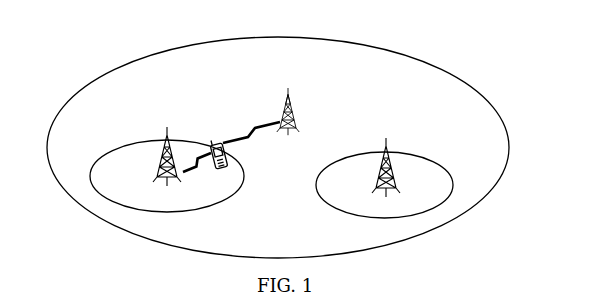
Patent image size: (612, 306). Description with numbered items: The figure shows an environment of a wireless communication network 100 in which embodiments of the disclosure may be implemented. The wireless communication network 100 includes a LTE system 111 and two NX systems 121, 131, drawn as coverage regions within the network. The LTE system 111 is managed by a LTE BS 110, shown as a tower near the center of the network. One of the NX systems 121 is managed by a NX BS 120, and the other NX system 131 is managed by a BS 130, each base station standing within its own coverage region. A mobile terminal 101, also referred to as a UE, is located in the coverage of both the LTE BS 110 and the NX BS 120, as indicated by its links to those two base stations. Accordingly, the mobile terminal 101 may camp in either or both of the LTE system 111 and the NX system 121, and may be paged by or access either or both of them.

The wireless communication network 100 is at (151, 24).
The mobile terminal 101 is at (212, 150).
The LTE BS 110 is at (296, 112).
The LTE system 111 is at (428, 62).
The NX BS 120 is at (162, 150).
The NX system 121 is at (243, 178).
The BS 130 is at (390, 158).
The NX system 131 is at (452, 183).